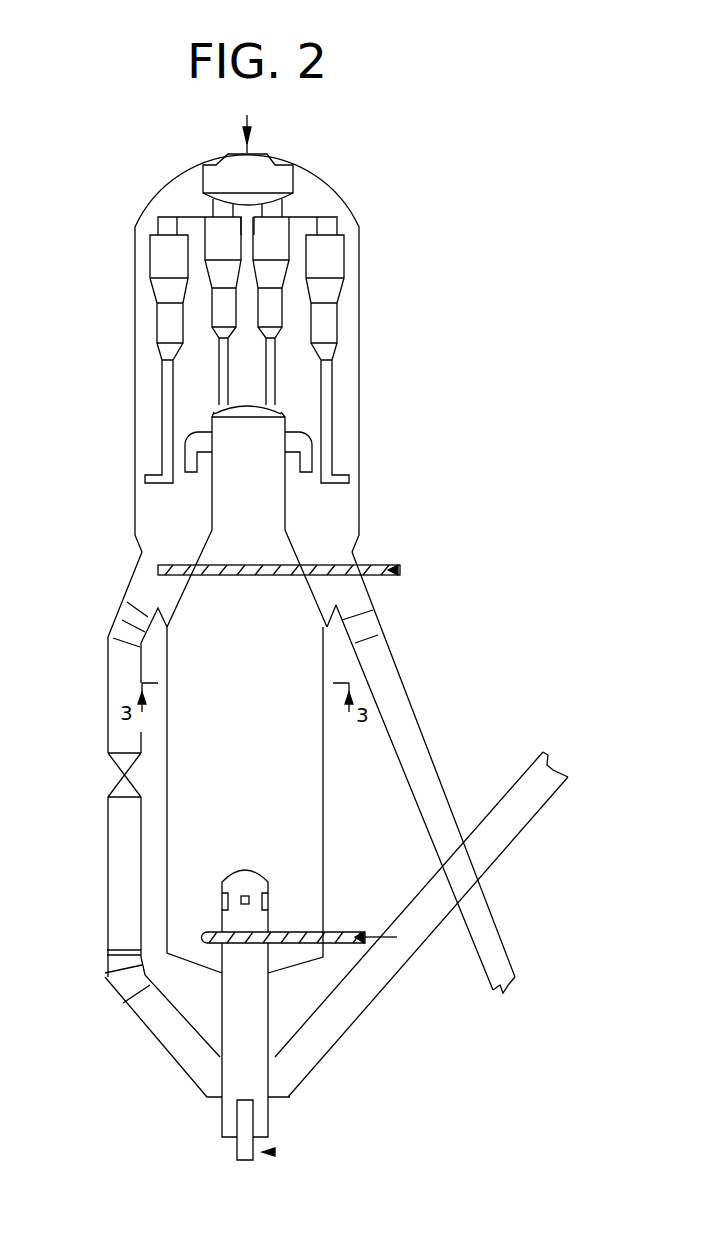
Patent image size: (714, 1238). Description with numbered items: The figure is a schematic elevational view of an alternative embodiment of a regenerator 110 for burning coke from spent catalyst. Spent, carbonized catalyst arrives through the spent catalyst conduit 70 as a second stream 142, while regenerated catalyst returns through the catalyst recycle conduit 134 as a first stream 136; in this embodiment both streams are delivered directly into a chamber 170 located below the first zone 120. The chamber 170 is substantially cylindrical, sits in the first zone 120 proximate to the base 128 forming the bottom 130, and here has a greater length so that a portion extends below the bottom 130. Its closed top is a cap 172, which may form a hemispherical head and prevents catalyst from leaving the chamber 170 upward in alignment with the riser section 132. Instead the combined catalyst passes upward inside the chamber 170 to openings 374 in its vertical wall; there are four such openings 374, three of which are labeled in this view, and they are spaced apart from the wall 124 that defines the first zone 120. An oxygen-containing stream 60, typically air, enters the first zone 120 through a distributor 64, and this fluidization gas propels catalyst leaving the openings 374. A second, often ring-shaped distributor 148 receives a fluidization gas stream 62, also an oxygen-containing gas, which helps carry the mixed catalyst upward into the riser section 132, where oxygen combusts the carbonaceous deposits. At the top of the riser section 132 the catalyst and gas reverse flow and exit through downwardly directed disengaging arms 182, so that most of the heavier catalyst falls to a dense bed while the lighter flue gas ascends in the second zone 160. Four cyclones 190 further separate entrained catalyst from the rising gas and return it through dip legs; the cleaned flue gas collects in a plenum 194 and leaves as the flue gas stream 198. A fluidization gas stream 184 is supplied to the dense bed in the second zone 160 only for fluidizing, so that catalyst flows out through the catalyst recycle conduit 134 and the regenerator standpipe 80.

The oxygen-containing stream 60 is at (270, 1153).
The fluidization gas stream 62 is at (388, 942).
The distributor 64 is at (233, 1150).
The spent catalyst conduit 70 is at (527, 805).
The regenerator standpipe 80 is at (378, 663).
The regenerator 110 is at (130, 357).
The first zone 120 is at (268, 640).
The wall 124 is at (173, 693).
The base 128 is at (165, 853).
The bottom 130 is at (292, 972).
The riser section 132 is at (232, 510).
The catalyst recycle conduit 134 is at (120, 677).
The first stream 136 is at (213, 1077).
The second stream 142 is at (293, 1077).
The distributor 148 is at (207, 927).
The second zone 160 is at (365, 330).
The chamber 170 is at (222, 1018).
The cap 172 is at (245, 873).
The disengaging arms 182 is at (197, 443).
The fluidization gas stream 184 is at (400, 572).
The cyclones 190 is at (222, 232).
The plenum 194 is at (218, 182).
The flue gas stream 198 is at (253, 141).
The openings 374 is at (220, 902).